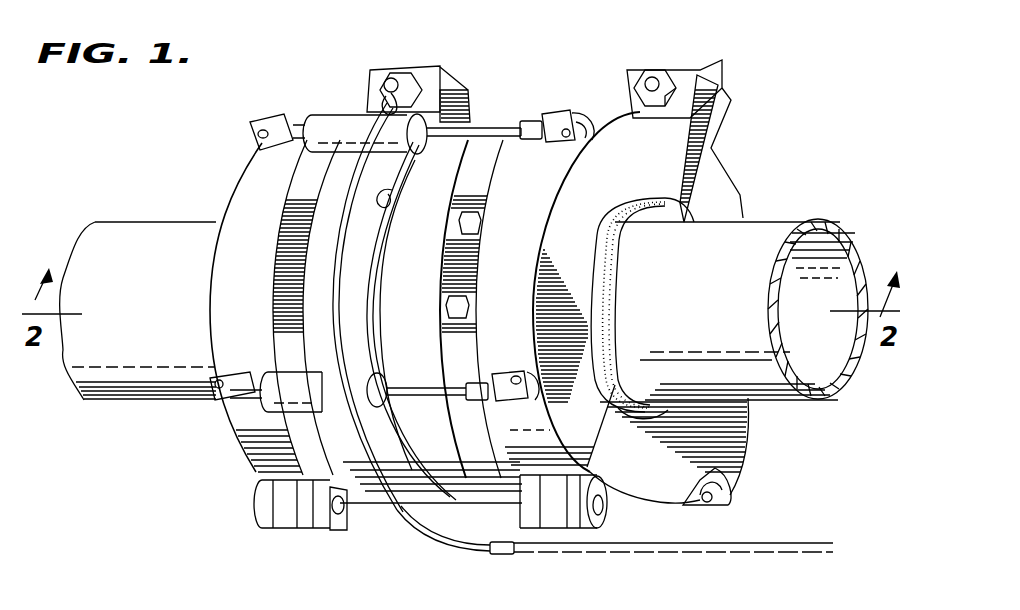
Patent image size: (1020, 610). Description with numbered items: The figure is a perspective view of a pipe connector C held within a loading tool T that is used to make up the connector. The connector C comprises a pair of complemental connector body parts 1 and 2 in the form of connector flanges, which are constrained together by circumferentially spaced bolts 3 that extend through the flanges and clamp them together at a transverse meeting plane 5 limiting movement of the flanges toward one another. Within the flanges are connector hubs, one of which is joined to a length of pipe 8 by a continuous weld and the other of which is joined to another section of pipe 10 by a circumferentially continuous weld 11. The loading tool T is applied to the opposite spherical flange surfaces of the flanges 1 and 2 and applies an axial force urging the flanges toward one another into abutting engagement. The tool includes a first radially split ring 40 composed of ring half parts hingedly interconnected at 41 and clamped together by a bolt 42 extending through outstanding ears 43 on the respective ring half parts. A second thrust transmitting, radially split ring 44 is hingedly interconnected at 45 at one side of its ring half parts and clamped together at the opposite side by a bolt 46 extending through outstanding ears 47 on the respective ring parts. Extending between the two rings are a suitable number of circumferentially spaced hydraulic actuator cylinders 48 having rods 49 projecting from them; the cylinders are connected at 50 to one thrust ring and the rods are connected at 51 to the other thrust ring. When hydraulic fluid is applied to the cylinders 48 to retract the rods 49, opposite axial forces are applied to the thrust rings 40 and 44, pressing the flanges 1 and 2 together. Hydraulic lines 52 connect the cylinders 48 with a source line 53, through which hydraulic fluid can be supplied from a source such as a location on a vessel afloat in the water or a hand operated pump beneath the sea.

The connector body part 1 is at (404, 503).
The connector body part 2 is at (486, 500).
The bolts 3 is at (470, 307).
The transverse meeting plane 5 is at (388, 196).
The pipe 8 is at (108, 236).
The pipe 10 is at (780, 232).
The weld 11 is at (606, 304).
The first radially split ring 40 is at (233, 193).
The hinge 41 is at (335, 518).
The bolt 42 is at (391, 80).
The outstanding ears 43 is at (453, 90).
The second radially split ring 44 is at (727, 440).
The hinge 45 is at (597, 512).
The bolt 46 is at (650, 80).
The outstanding ears 47 is at (718, 86).
The hydraulic actuator cylinders 48 is at (326, 115).
The rods 49 is at (481, 127).
The cylinder connection 50 is at (255, 138).
The rod connection 51 is at (566, 138).
The hydraulic lines 52 is at (420, 533).
The source line 53 is at (763, 551).
The pipe connector C is at (501, 113).
The loading tool T is at (735, 180).